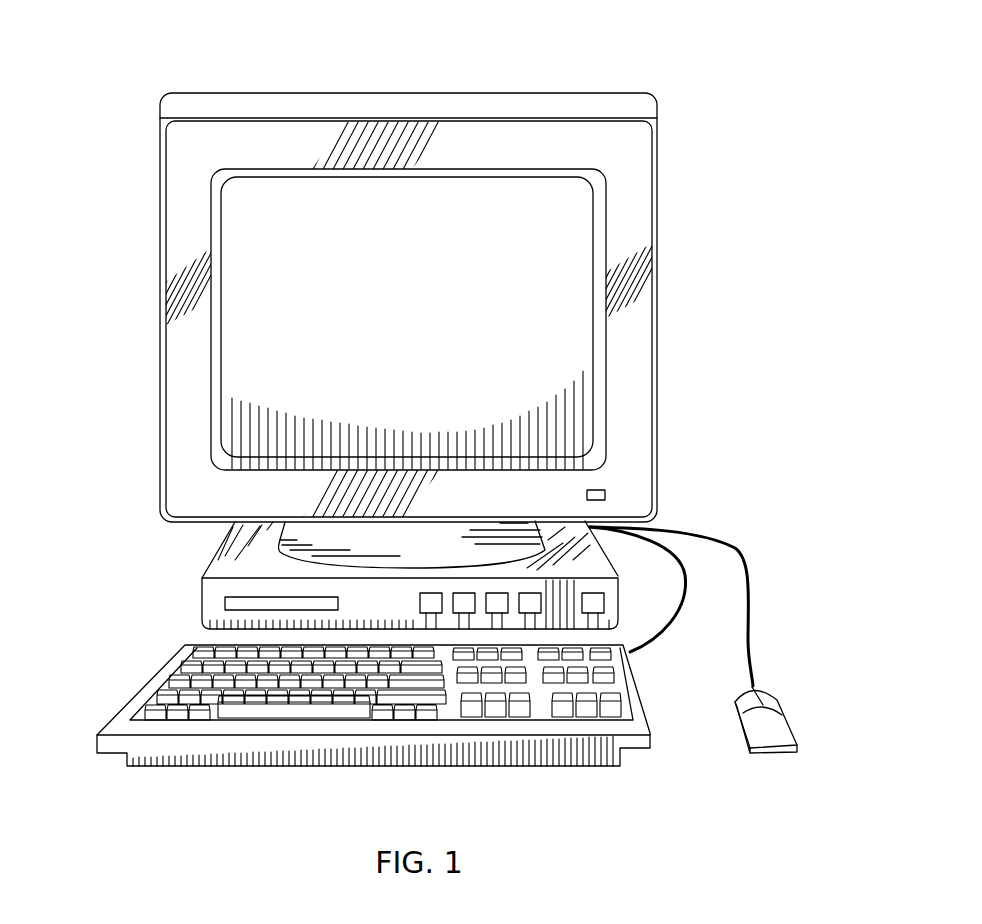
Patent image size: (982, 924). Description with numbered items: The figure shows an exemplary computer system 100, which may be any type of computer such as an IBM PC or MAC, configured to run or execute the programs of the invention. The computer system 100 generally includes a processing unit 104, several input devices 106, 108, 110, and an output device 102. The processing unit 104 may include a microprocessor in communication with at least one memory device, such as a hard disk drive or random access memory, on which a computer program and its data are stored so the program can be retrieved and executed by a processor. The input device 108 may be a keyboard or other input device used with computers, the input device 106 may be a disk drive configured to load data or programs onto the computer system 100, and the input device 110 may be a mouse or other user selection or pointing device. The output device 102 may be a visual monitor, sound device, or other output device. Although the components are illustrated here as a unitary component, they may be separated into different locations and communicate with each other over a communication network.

The computer system 100 is at (727, 108).
The output device 102 is at (397, 306).
The processing unit 104 is at (218, 557).
The input device 106 is at (225, 603).
The input device 108 is at (147, 698).
The input device 110 is at (778, 757).